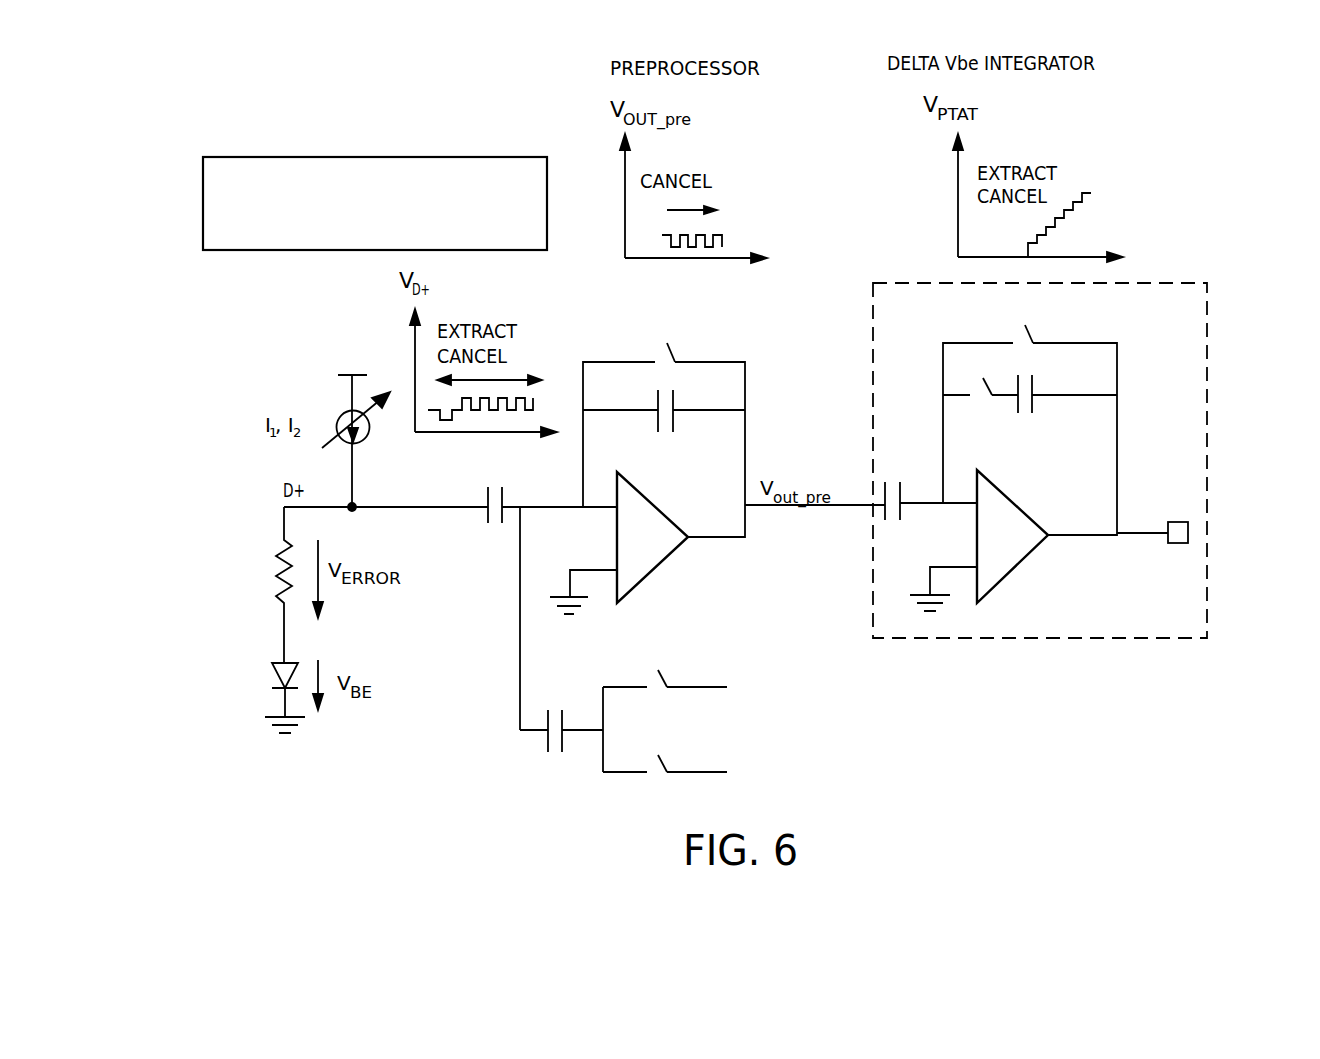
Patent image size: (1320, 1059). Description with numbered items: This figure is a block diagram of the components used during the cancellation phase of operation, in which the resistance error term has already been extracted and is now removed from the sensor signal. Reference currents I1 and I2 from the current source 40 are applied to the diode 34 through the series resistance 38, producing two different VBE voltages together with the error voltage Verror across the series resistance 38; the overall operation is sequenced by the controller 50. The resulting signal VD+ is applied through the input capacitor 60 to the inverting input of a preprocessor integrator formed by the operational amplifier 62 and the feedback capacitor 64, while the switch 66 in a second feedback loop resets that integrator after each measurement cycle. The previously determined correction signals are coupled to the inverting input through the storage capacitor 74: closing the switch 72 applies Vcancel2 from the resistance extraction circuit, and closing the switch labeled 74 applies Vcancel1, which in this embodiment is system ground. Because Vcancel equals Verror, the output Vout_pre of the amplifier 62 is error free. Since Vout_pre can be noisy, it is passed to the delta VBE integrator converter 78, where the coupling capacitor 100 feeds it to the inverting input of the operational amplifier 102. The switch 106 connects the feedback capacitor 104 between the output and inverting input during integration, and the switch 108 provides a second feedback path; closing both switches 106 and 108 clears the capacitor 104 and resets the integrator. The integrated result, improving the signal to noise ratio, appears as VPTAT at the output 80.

The diode 34 is at (281, 665).
The resistance 38 is at (284, 555).
The current source 40 is at (343, 412).
The controller 50 is at (470, 215).
The input capacitor 60 is at (504, 490).
The operational amplifier 62 is at (655, 505).
The feedback capacitor 64 is at (675, 400).
The switch 66 is at (668, 343).
The switch 72 is at (659, 672).
The capacitor 74 is at (546, 742).
The temperature to voltage converter 78 is at (987, 638).
The VPTAT output 80 is at (1180, 546).
The coupling capacitor 100 is at (901, 514).
The operational amplifier 102 is at (1015, 503).
The feedback capacitor 104 is at (1034, 380).
The switch 106 is at (982, 383).
The switch 108 is at (1026, 325).